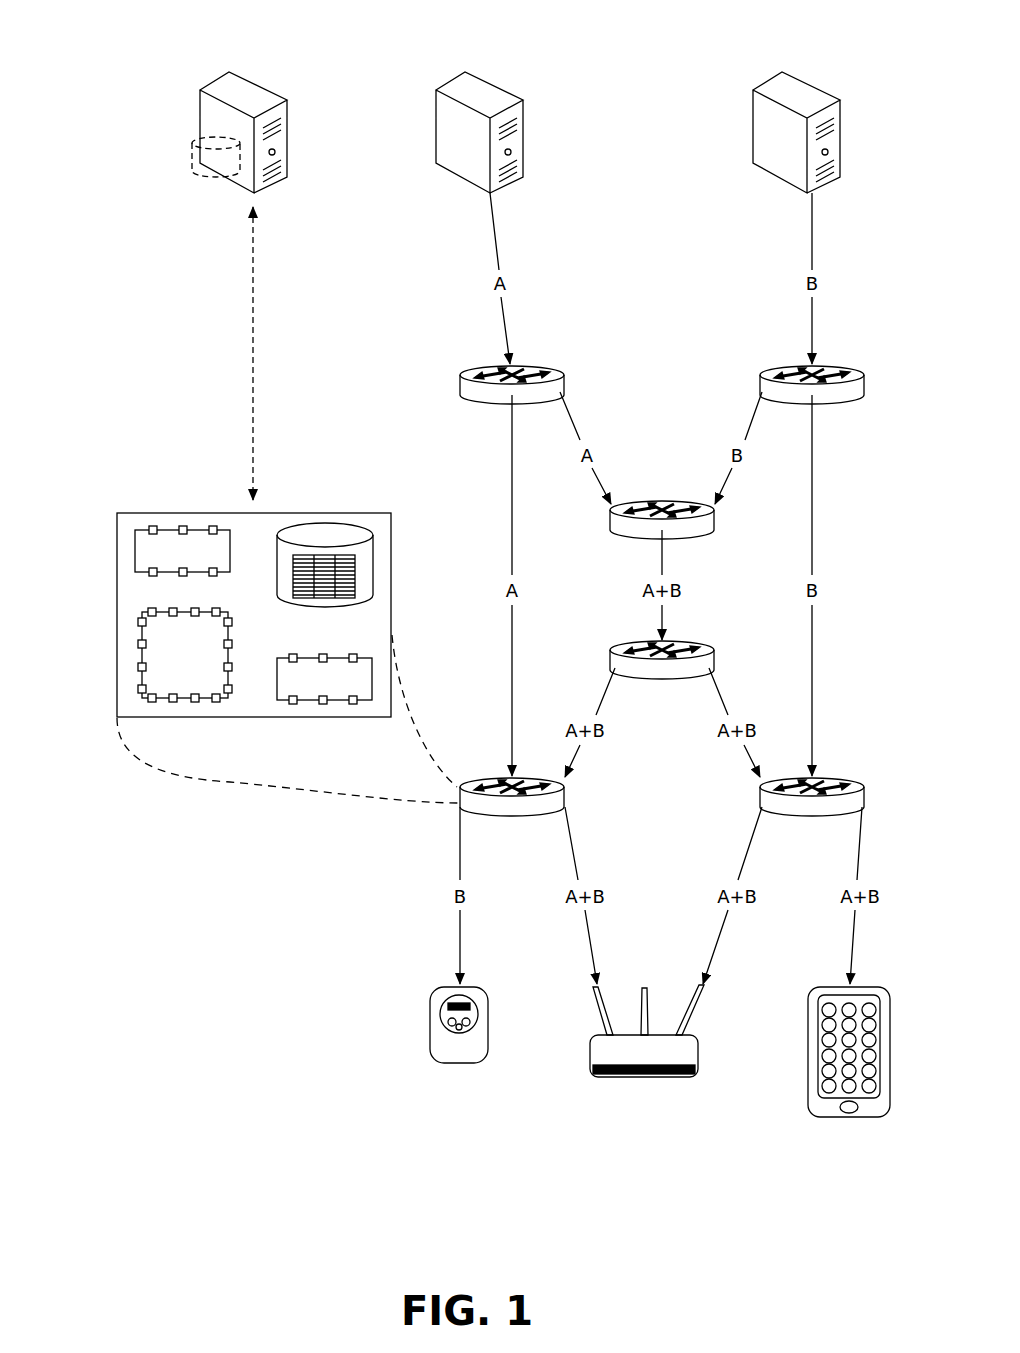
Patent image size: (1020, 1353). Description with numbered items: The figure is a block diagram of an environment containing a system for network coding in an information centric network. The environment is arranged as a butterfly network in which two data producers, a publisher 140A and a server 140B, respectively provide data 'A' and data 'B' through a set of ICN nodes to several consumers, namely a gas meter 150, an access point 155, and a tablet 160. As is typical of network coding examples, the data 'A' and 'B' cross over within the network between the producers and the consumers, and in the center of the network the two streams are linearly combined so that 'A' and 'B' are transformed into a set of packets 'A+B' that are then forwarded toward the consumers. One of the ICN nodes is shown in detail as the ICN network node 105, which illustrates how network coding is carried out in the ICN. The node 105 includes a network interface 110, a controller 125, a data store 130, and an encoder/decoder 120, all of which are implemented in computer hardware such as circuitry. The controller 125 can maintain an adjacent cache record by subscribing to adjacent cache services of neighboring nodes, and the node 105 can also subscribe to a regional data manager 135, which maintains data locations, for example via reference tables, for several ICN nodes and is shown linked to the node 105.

The ICN network node 105 is at (132, 513).
The network interface 110 is at (323, 702).
The encoder/decoder 120 is at (135, 552).
The controller 125 is at (142, 658).
The data store 130 is at (330, 523).
The regional data manager 135 is at (201, 94).
The publisher 140A is at (468, 72).
The server 140B is at (787, 72).
The gas meter 150 is at (430, 1022).
The access point 155 is at (592, 1073).
The tablet 160 is at (849, 1118).